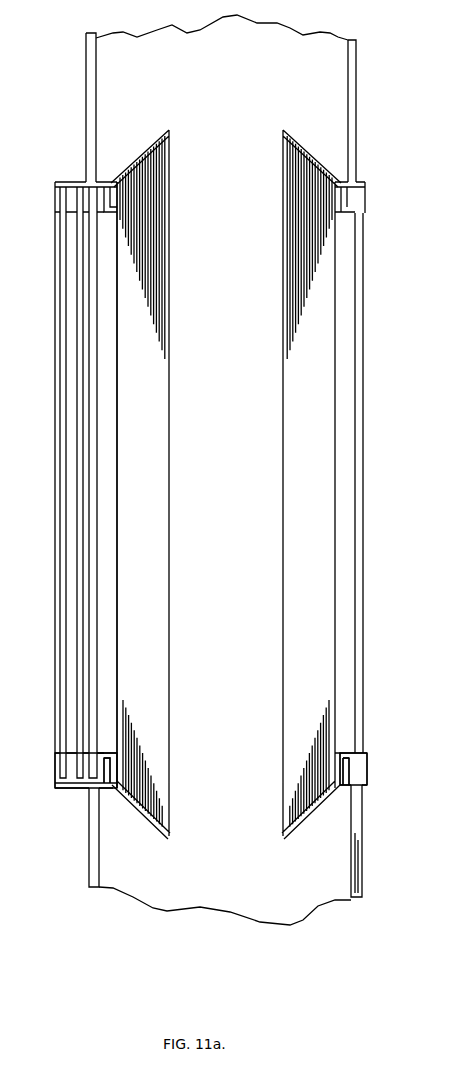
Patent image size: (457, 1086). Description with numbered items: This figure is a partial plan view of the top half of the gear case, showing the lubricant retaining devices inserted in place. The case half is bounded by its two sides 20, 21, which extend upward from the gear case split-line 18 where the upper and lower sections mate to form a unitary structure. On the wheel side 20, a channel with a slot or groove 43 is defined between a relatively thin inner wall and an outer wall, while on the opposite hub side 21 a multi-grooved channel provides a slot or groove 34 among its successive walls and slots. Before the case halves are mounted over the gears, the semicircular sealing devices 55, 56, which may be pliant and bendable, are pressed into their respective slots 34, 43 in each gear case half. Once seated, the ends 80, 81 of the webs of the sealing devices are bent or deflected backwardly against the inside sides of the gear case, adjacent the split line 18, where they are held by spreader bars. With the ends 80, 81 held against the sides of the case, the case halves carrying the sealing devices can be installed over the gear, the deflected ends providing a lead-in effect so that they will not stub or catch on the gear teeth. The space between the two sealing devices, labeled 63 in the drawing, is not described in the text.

The split-line 18 is at (352, 148).
The side 20 is at (360, 92).
The side 21 is at (84, 97).
The slot or groove 34 is at (98, 783).
The slot or groove 43 is at (363, 763).
The sealing device 55 is at (265, 488).
The sealing device 56 is at (190, 590).
The channel between blades 63 is at (300, 375).
The end of web 80 is at (282, 160).
The end of web 81 is at (170, 155).